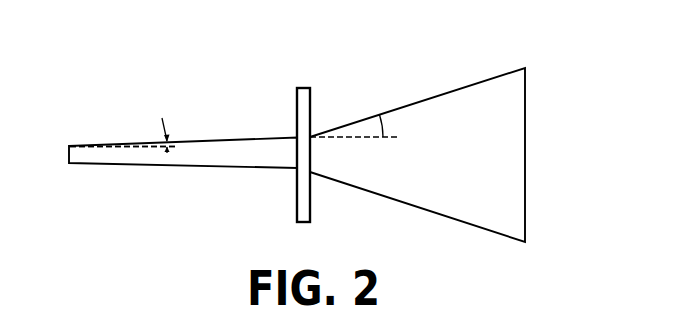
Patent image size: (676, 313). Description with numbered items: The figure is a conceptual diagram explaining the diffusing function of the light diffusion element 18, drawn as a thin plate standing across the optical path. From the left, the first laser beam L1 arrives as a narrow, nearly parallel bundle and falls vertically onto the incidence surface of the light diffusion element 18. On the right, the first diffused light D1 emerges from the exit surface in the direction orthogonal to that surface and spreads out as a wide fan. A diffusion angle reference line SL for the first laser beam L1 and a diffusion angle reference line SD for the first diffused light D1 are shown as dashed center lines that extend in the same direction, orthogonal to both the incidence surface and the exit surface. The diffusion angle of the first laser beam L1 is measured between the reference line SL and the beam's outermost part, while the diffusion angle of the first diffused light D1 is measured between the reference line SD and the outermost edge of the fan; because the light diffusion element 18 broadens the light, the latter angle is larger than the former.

The light diffusion element 18 is at (303, 87).
The first laser beam L1 is at (238, 142).
The diffusion angle reference line of the first laser beam SL is at (154, 146).
The diffusion angle reference line of the first diffused light SD is at (358, 139).
The first diffused light D1 is at (508, 158).